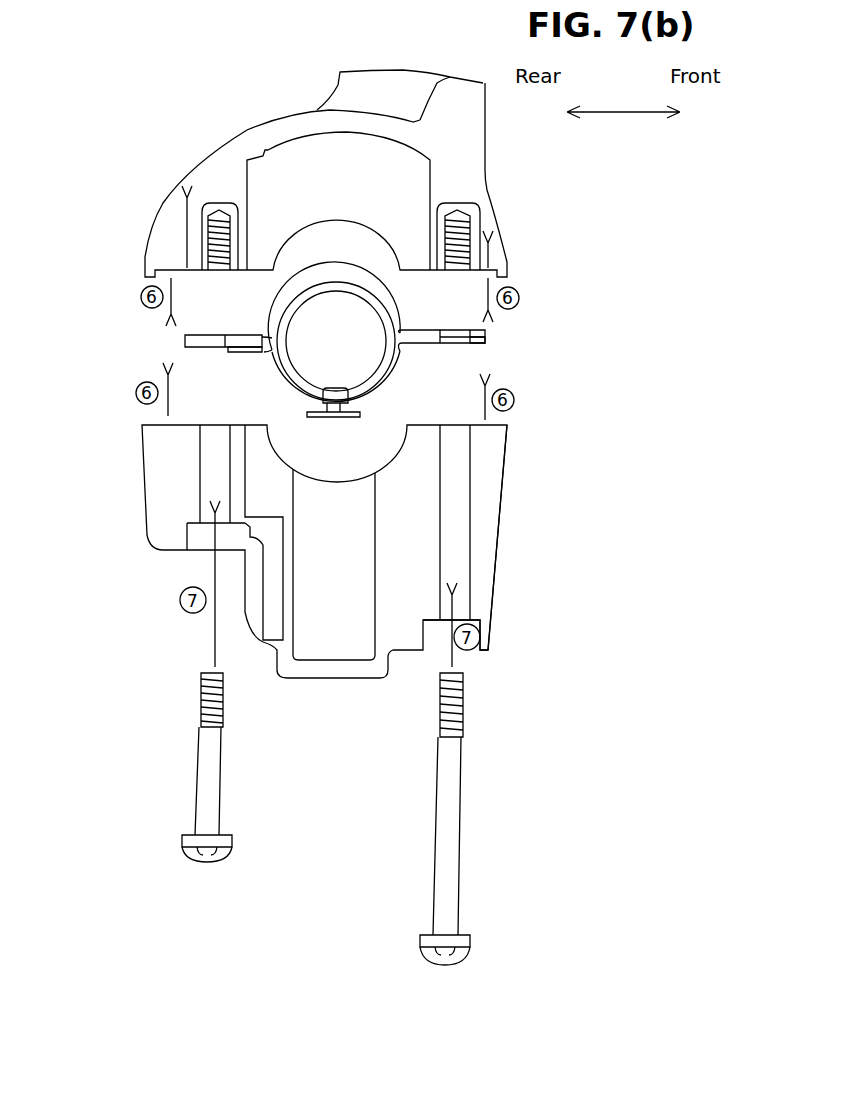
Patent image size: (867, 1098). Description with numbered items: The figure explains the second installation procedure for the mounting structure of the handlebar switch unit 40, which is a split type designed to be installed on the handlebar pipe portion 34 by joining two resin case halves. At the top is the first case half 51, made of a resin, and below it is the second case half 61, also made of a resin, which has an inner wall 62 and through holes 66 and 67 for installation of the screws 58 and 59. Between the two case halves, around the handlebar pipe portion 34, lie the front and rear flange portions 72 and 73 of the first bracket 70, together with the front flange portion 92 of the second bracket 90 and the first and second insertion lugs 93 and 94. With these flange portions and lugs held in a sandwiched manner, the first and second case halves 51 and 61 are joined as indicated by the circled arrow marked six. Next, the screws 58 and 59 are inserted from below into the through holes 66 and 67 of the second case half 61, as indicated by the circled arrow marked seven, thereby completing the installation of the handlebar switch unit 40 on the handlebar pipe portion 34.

The handlebar switch unit 40 is at (170, 150).
The first case half 51 is at (490, 172).
The handlebar pipe portion 34 is at (335, 290).
The second bracket 90 is at (490, 325).
The front flange portion of the second bracket 92 is at (428, 330).
The first bracket 70 is at (490, 348).
The front flange portion 72 is at (421, 350).
The rear flange portion 73 is at (193, 345).
The first insertion lug 93 is at (243, 352).
The second insertion lug 94 is at (230, 375).
The second case half 61 is at (510, 465).
The inner wall 62 is at (501, 585).
The through hole 66 is at (198, 470).
The through hole 67 is at (465, 545).
The screw 58 is at (208, 758).
The screw 59 is at (450, 813).